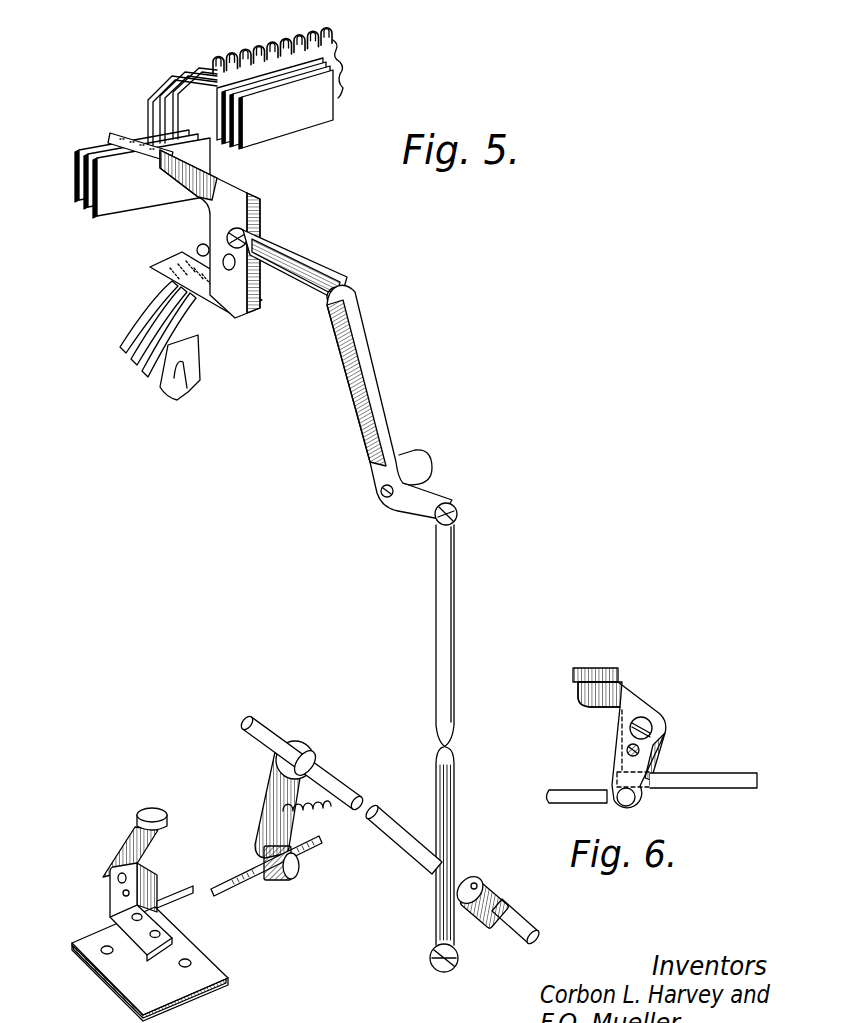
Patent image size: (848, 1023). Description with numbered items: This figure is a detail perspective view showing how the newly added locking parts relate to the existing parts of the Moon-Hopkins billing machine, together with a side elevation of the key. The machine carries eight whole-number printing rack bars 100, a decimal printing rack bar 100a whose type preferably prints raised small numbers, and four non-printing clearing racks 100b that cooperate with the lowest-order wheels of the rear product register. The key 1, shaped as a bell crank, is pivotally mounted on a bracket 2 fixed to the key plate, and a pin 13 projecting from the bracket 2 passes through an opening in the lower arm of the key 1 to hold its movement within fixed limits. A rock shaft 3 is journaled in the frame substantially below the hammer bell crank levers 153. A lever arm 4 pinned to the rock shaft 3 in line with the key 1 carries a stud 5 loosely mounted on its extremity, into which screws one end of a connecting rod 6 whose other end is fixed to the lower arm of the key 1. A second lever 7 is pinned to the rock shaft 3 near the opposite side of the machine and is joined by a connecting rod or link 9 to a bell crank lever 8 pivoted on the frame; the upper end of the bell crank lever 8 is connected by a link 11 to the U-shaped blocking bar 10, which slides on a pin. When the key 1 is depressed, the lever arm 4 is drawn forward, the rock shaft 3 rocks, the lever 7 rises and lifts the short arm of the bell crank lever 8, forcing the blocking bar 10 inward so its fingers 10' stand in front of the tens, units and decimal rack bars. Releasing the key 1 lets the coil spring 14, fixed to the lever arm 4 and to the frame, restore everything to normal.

In FIG. 5, the key 1 is at (155, 818).
In FIG. 6, the key 1 is at (590, 675).
In FIG. 5, the bracket 2 is at (113, 890).
In FIG. 6, the bracket 2 is at (667, 765).
In FIG. 5, the rock shaft 3 is at (268, 723).
In FIG. 5, the lever arm 4 is at (272, 785).
In FIG. 5, the stud 5 is at (290, 875).
In FIG. 5, the connecting rod 6 is at (240, 887).
In FIG. 6, the connecting rod 6 is at (560, 791).
In FIG. 5, the second lever 7 is at (467, 935).
In FIG. 5, the bell crank lever 8 is at (383, 443).
In FIG. 5, the connecting rod or link 9 is at (445, 656).
In FIG. 5, the blocking bar 10 is at (228, 234).
In FIG. 5, the fingers 10' is at (181, 201).
In FIG. 5, the link 11 is at (290, 260).
In FIG. 6, the pin 13 is at (641, 750).
In FIG. 5, the coil spring 14 is at (327, 806).
In FIG. 5, the printing rack bars 100 is at (168, 97).
In FIG. 5, the decimal printing rack bar 100a is at (207, 97).
In FIG. 5, the non-printing clearing racks 100b is at (328, 104).
In FIG. 5, the hammer bell crank levers 153 is at (200, 325).